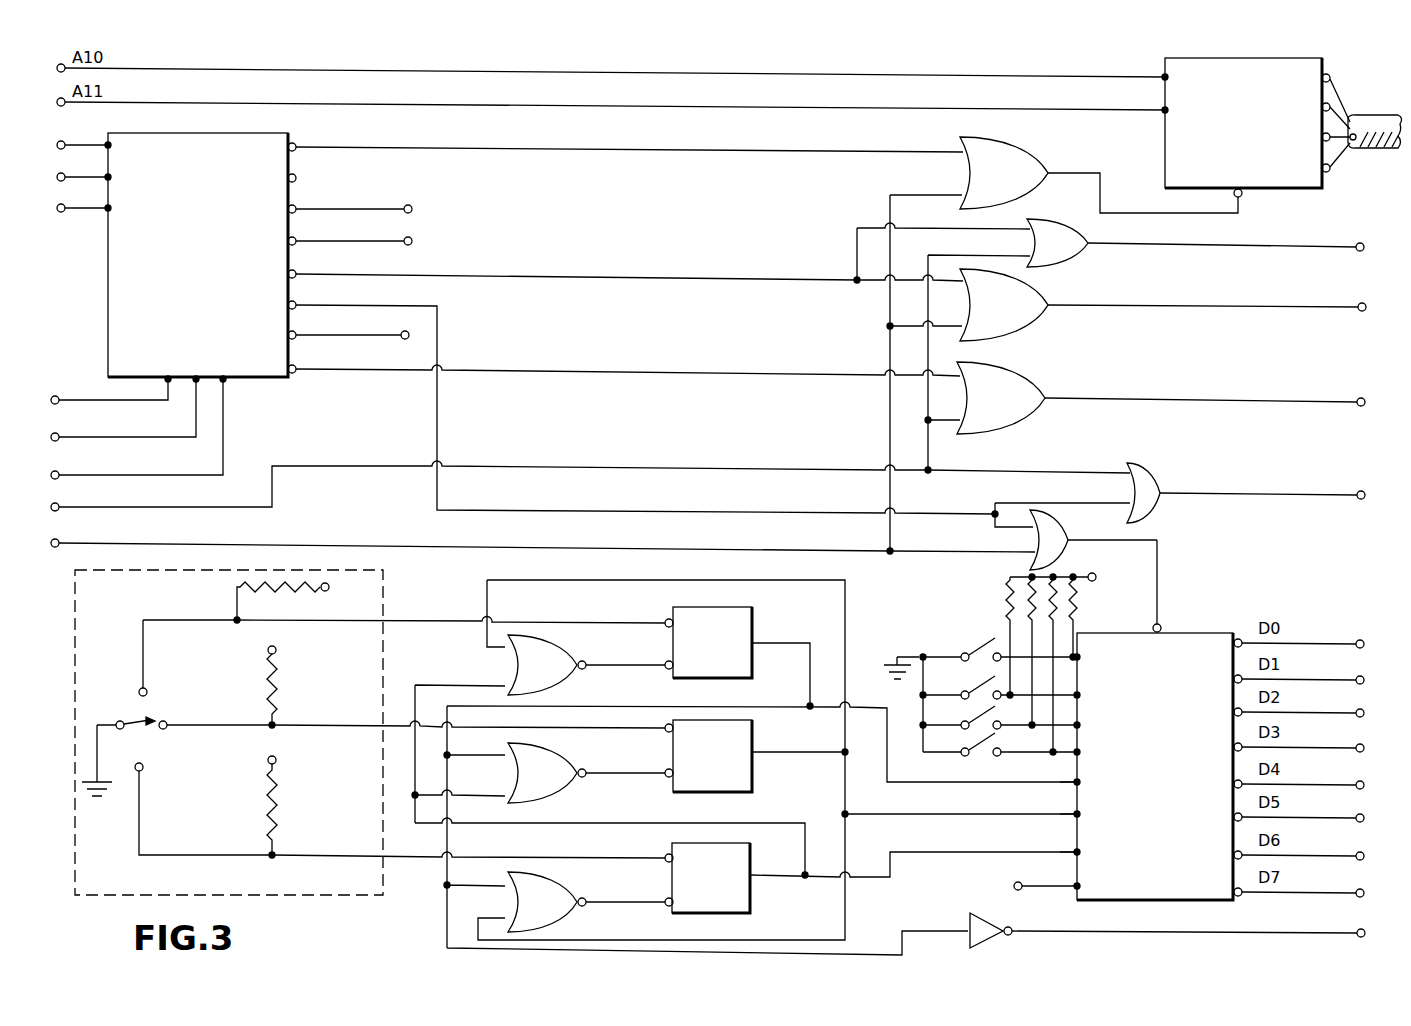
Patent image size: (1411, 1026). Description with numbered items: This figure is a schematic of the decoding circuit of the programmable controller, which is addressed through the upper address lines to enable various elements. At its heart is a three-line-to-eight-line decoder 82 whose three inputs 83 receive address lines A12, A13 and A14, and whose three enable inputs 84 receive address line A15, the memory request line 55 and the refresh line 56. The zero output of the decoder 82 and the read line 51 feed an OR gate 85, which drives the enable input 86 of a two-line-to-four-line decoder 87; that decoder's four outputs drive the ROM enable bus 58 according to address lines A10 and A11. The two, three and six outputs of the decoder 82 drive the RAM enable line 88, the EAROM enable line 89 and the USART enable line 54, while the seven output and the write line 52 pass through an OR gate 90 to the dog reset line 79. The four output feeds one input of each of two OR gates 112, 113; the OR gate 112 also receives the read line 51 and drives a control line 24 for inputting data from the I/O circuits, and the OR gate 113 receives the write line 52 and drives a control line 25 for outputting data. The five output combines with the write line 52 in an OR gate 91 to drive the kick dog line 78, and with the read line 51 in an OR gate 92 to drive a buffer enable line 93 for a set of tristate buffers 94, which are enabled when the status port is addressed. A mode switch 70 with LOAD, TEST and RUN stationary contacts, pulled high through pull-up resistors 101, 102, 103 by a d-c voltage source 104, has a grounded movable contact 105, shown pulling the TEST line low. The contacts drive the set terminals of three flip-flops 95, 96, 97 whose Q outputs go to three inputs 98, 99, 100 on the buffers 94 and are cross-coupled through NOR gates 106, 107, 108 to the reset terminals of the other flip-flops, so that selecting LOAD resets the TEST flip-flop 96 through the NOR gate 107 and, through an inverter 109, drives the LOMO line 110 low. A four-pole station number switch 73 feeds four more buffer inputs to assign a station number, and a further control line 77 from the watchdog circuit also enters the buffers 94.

The control line 24 is at (1358, 304).
The control line 25 is at (1360, 252).
The read line 51 is at (276, 544).
The write line 52 is at (357, 465).
The USART enable line 54 is at (403, 338).
The memory request line 55 is at (188, 436).
The refresh line 56 is at (185, 473).
The ROM enable bus 58 is at (1389, 152).
The mode switch 70 is at (70, 628).
The station number switch 73 is at (981, 637).
The control line 77 is at (1013, 886).
The kick dog line 78 is at (1360, 500).
The dog reset line 79 is at (1120, 398).
The three-line-to-eight-line decoder 82 is at (108, 305).
The inputs 83 is at (118, 138).
The enable inputs 84 is at (163, 407).
The OR gate 85 is at (1012, 185).
The enable input 86 is at (1243, 198).
The two-line-to-four-line decoder 87 is at (1252, 97).
The RAM enable line 88 is at (412, 207).
The EAROM enable line 89 is at (412, 240).
The OR gate 90 is at (1007, 410).
The OR gate 91 is at (1150, 466).
The OR gate 92 is at (1057, 530).
The buffer enable line 93 is at (1160, 598).
The buffers 94 is at (1177, 859).
The flip-flop 95 is at (721, 655).
The flip-flop 96 is at (721, 764).
The flip-flop 97 is at (719, 887).
The input 98 is at (1072, 785).
The input 99 is at (1072, 818).
The input 100 is at (1072, 855).
The pull-up resistor 101 is at (243, 584).
The pull-up resistor 102 is at (279, 690).
The pull-up resistor 103 is at (280, 814).
The d-c voltage source 104 is at (328, 592).
The movable contact 105 is at (137, 720).
The NOR gate 106 is at (554, 676).
The NOR gate 107 is at (554, 784).
The NOR gate 108 is at (554, 913).
The inverter 109 is at (968, 917).
The LOMO line 110 is at (1358, 930).
The OR gate 112 is at (1020, 316).
The OR gate 113 is at (1072, 254).